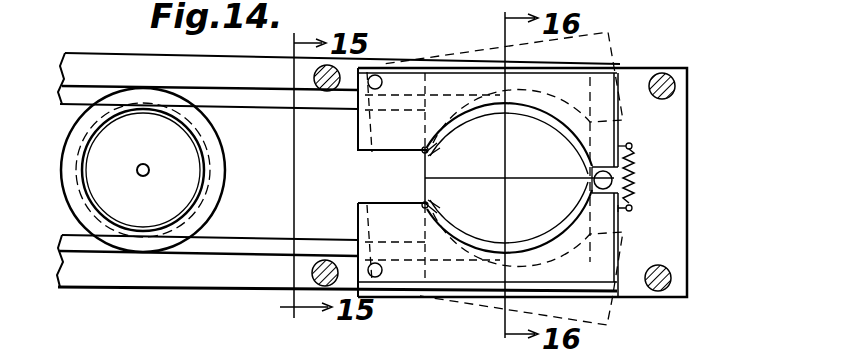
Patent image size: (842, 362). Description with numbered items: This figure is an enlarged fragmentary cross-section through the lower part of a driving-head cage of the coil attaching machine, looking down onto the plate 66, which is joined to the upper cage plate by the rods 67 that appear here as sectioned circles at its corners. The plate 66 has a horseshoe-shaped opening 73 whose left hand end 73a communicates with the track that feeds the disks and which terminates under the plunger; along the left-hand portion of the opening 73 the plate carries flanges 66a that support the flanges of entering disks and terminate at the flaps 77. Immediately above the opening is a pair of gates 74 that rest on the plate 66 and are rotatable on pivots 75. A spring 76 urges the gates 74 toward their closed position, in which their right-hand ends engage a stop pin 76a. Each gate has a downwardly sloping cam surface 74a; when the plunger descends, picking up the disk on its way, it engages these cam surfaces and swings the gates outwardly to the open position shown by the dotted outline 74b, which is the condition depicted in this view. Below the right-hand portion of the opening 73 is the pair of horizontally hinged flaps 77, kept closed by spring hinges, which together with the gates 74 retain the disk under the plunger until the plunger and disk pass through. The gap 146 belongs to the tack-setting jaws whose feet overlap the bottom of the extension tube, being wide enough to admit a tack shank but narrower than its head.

The gap 146 is at (372, 0).
The plate 66 is at (672, 148).
The flanges 66a is at (326, 100).
The rods 67 is at (672, 88).
The horseshoe-shaped opening 73 is at (340, 187).
The left hand end of opening 73a is at (288, 192).
The gates 74 is at (482, 88).
The cam surfaces 74a is at (537, 117).
The dotted outline 74b is at (486, 53).
The pivots 75 is at (380, 88).
The spring 76 is at (638, 178).
The stop pin 76a is at (634, 206).
The flaps 77 is at (443, 196).